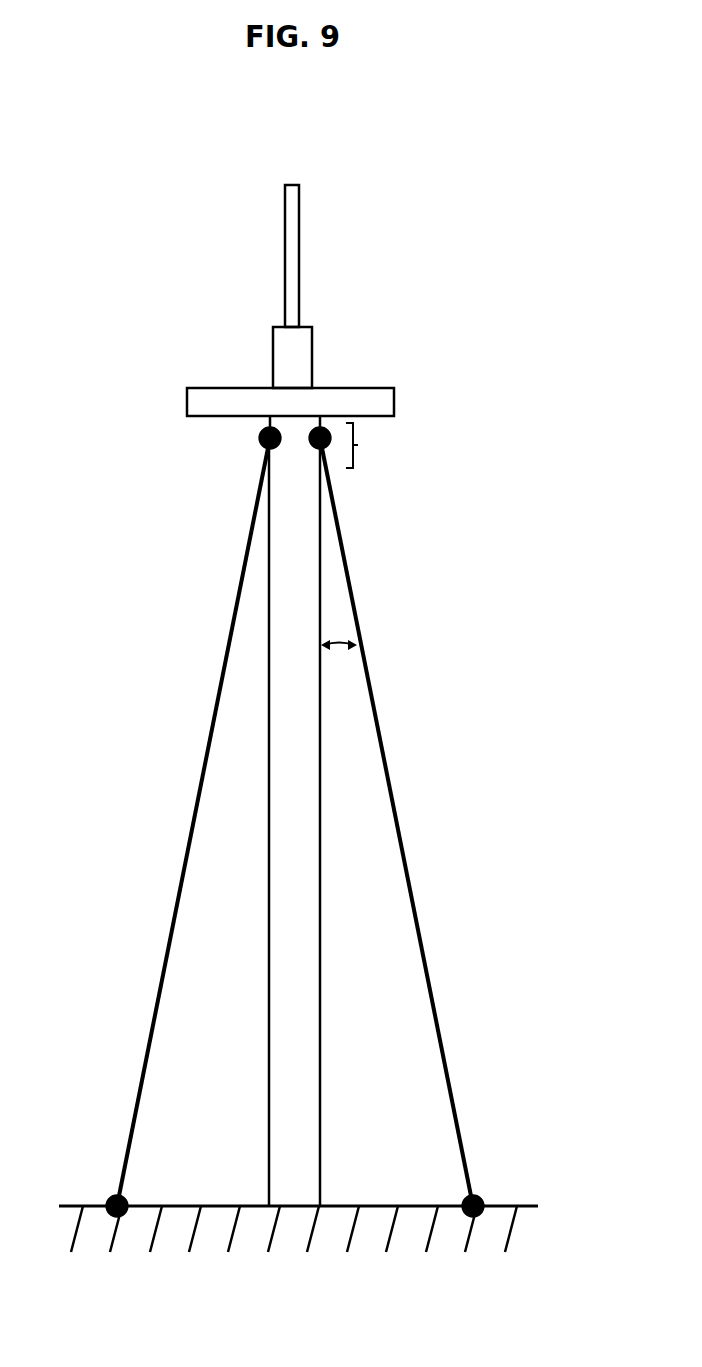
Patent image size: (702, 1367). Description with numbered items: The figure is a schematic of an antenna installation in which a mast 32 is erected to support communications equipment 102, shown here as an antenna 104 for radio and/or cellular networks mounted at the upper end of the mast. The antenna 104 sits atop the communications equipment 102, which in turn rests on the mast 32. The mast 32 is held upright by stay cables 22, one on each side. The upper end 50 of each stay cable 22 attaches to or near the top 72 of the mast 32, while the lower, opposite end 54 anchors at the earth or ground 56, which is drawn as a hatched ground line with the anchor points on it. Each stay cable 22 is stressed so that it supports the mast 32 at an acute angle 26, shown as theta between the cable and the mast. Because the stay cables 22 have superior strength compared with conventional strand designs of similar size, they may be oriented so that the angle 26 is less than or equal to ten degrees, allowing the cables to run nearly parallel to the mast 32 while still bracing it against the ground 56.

The antenna 104 is at (300, 248).
The communications equipment 102 is at (313, 357).
The upper end 50 is at (259, 440).
The top 72 is at (367, 445).
The mast 32 is at (268, 937).
The stay cable 22 is at (197, 787).
The acute angle 26 is at (345, 632).
The lower end 54 is at (113, 1199).
The ground 56 is at (527, 1206).